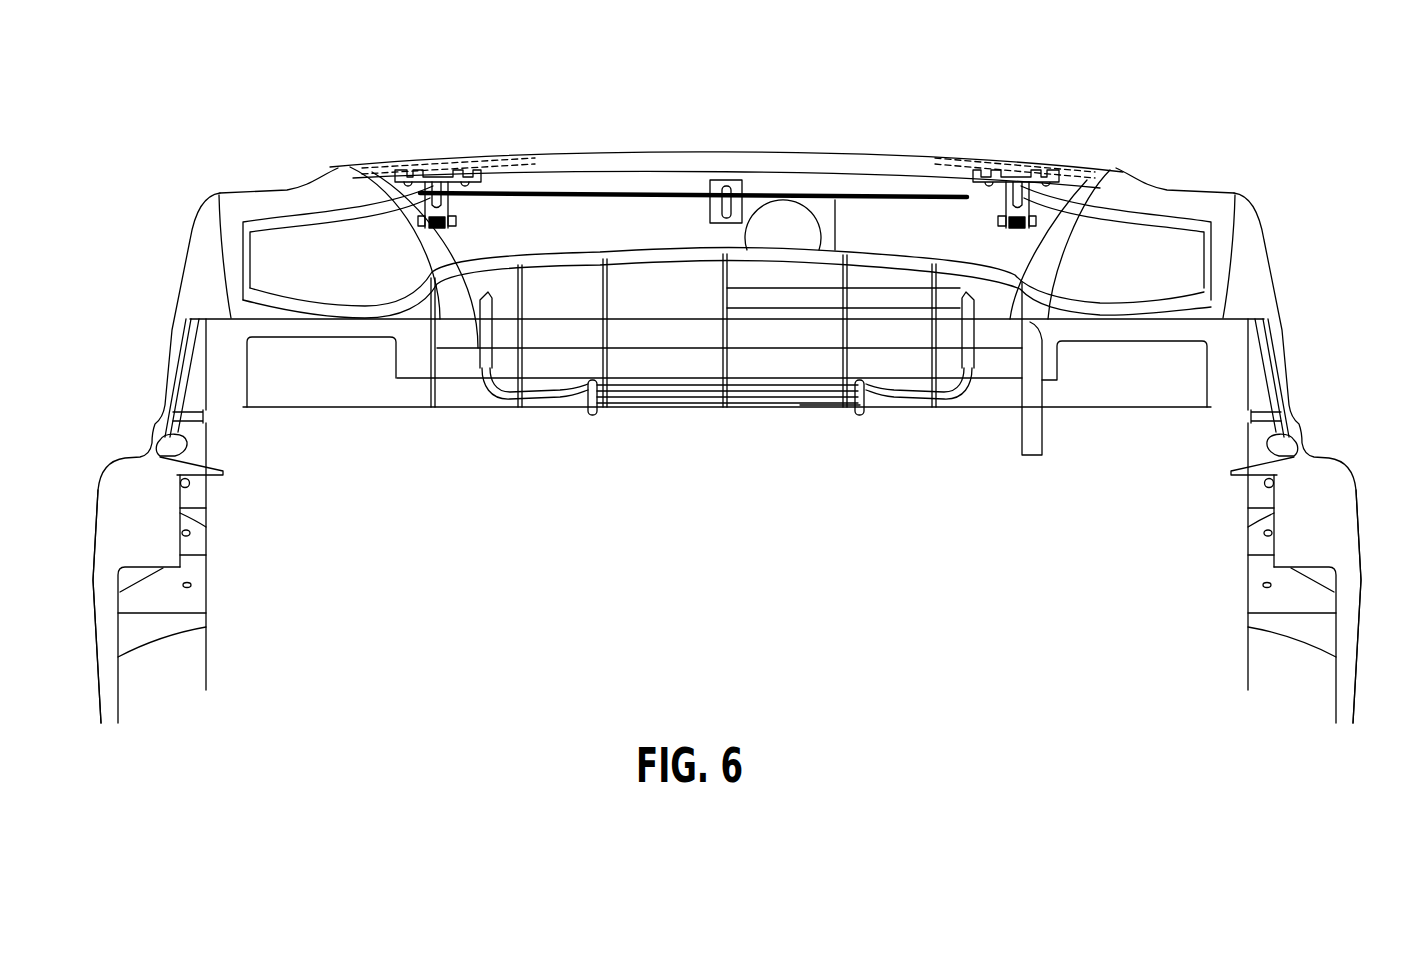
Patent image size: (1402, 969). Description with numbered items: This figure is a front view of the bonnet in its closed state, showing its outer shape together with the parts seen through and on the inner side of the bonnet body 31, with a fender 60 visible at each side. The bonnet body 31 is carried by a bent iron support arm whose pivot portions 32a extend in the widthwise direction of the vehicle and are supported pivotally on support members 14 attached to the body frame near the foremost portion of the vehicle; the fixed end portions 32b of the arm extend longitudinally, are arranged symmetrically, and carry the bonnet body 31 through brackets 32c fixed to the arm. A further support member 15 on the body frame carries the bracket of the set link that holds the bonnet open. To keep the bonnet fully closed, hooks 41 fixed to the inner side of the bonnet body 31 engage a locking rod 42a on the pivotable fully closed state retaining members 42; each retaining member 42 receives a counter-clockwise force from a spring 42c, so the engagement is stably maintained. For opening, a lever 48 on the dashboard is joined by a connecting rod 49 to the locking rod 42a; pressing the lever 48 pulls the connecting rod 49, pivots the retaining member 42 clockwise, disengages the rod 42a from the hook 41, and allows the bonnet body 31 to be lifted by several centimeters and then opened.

The bonnet body 31 is at (377, 164).
The hook 41 is at (428, 162).
The fully closed state retaining member 42 is at (452, 207).
The locking rod 42a is at (627, 199).
The spring 42c is at (438, 230).
The lever 48 is at (745, 166).
The connecting rod 49 is at (727, 182).
The pivot portion 32a is at (584, 398).
The fixed end portion 32b is at (693, 383).
The bracket 32c is at (482, 357).
The support member 14 is at (835, 403).
The support member 15 is at (1021, 432).
The fender 60 is at (110, 498).